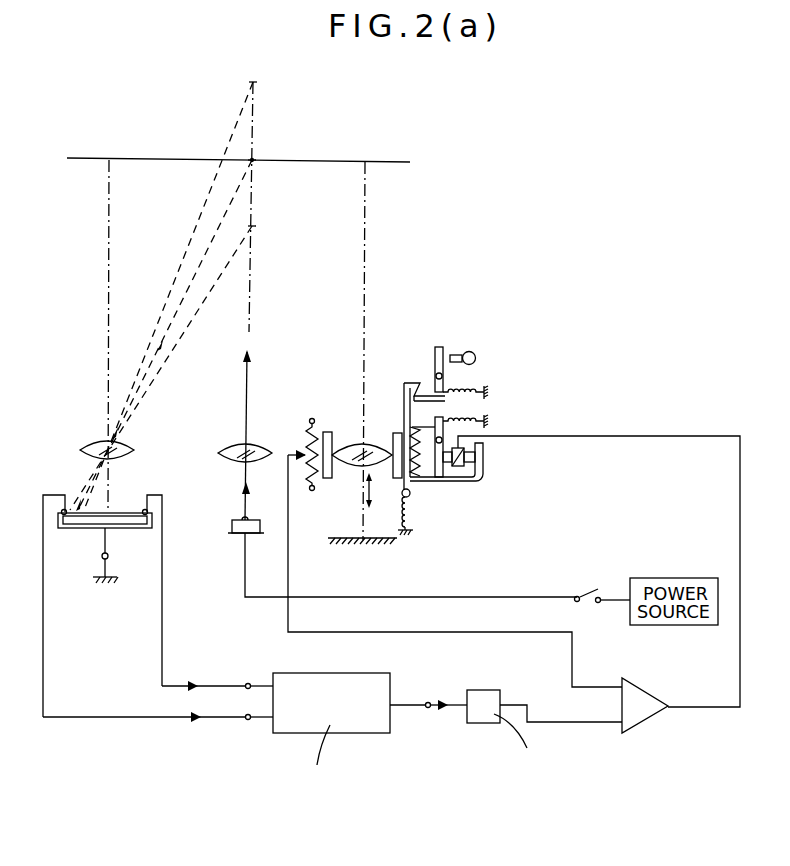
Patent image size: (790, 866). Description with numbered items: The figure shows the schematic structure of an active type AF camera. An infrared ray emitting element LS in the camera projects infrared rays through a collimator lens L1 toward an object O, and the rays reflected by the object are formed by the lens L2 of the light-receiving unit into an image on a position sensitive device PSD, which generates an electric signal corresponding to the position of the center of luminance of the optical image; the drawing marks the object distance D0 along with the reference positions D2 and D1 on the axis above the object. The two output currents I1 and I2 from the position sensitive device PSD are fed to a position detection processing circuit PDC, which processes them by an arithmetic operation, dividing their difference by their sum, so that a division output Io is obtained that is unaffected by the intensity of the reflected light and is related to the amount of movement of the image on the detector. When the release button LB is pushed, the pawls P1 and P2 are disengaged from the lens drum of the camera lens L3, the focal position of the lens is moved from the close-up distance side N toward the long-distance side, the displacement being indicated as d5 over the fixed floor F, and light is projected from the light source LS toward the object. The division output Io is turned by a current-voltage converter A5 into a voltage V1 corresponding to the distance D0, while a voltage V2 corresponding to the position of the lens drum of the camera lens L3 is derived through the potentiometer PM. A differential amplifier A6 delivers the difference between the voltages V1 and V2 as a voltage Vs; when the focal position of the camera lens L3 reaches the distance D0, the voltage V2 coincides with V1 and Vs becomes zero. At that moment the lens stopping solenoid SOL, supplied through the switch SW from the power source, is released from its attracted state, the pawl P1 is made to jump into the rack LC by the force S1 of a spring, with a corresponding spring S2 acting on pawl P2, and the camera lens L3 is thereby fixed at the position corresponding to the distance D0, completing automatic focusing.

The object distance point D2 is at (265, 83).
The distance to the object D0 is at (266, 150).
The object O is at (260, 172).
The object distance point D1 is at (264, 226).
The lens of light-receiving unit L2 is at (100, 441).
The collimator lens L1 is at (238, 447).
The position sensitive device PSD is at (102, 606).
The infrared ray emitting element LS is at (252, 538).
The potentiometer PM is at (308, 444).
The camera lens L3 is at (355, 445).
The pawl P2 is at (428, 383).
The pawl P1 is at (428, 479).
The release button LB is at (467, 352).
The solenoid coil S2 is at (468, 389).
The spring force S1 is at (468, 420).
The lens stopping solenoid SOL is at (467, 466).
The rack LC is at (409, 496).
The close-up distance side N is at (378, 493).
The lens displacement d5 is at (373, 528).
The fixed floor F is at (372, 542).
The switch SW is at (601, 583).
The position detection processing circuit PDC is at (350, 673).
The output current I2 is at (217, 677).
The output current I1 is at (158, 731).
The current-voltage converter A5 is at (487, 690).
The division output Io is at (500, 748).
The voltage corresponding to object distance V1 is at (561, 725).
The voltage corresponding to lens drum position V2 is at (598, 678).
The differential amplifier A6 is at (652, 692).
The output voltage Vs is at (683, 721).